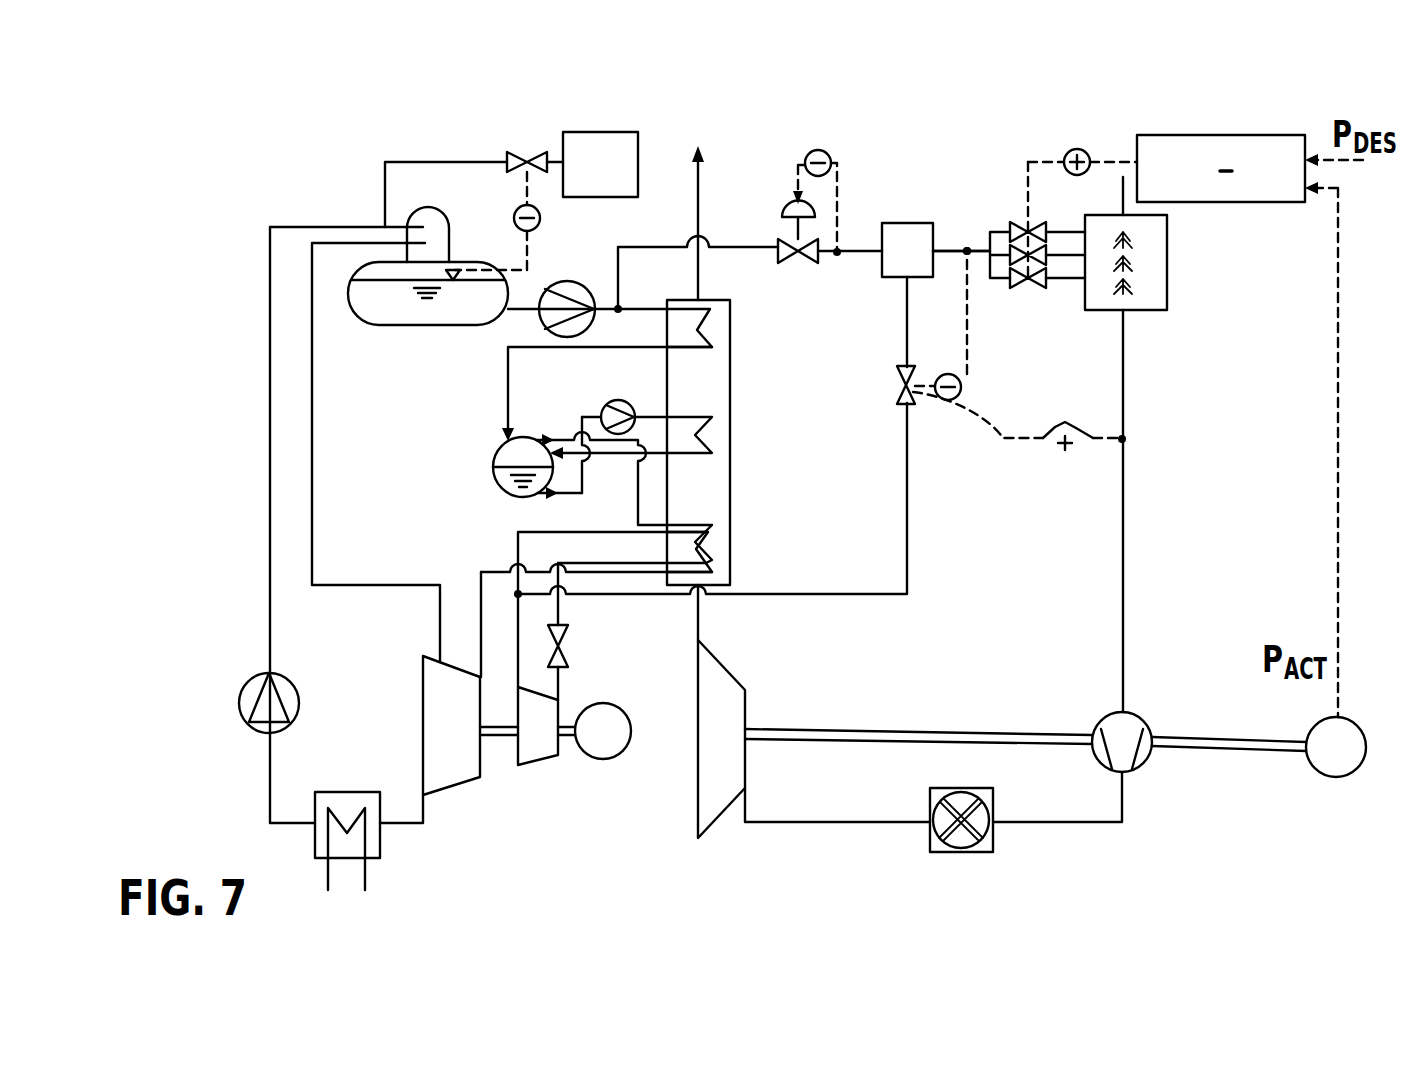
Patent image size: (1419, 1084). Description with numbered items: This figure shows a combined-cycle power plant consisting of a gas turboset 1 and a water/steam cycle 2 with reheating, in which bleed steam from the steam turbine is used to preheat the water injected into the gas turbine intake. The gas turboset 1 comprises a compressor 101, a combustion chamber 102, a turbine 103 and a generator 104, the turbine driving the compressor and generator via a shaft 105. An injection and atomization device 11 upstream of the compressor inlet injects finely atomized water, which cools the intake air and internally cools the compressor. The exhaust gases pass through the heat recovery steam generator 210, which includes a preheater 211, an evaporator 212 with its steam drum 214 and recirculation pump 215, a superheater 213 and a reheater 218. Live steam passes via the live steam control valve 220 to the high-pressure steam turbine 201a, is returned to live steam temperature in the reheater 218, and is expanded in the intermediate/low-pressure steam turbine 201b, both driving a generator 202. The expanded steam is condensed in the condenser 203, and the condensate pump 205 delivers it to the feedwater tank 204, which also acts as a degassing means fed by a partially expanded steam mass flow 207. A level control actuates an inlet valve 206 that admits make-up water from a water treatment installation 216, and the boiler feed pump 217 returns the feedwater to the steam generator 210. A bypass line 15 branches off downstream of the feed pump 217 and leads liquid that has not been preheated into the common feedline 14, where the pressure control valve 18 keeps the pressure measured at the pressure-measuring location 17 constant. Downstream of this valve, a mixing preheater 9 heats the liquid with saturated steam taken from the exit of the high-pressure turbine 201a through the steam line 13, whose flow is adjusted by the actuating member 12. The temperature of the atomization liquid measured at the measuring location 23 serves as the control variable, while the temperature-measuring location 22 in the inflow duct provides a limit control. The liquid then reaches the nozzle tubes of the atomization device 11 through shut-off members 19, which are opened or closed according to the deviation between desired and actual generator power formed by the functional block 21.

The gas turboset 1 is at (954, 697).
The water/steam cycle 2 is at (423, 447).
The mixing preheater 9 is at (893, 223).
The injection and atomization device 11 is at (1163, 300).
The actuating member 12 is at (910, 404).
The branch line 13 is at (907, 528).
The feedline 14 is at (980, 250).
The bypass line 15 is at (655, 247).
The pressure-measuring location 17 is at (829, 234).
The pressure control valve 18 is at (782, 257).
The shut-off members 19 is at (1040, 285).
The functional block 21 is at (1217, 202).
The temperature-measuring location 22 is at (1124, 440).
The measuring location 23 is at (967, 251).
The compressor 101 is at (1136, 766).
The combustion chamber 102 is at (991, 829).
The turbine 103 is at (718, 808).
The generator 104 is at (1332, 778).
The shaft 105 is at (1010, 733).
The high-pressure steam turbine 201a is at (527, 762).
The intermediate/low-pressure steam turbine 201b is at (462, 760).
The generator 202 is at (612, 755).
The condenser 203 is at (378, 838).
The feedwater tank 204 is at (402, 325).
The condensate pump 205 is at (238, 698).
The inlet valve 206 is at (527, 150).
The partially expanded steam mass flow 207 is at (312, 513).
The heat recovery steam generator 210 is at (730, 472).
The preheater 211 is at (700, 322).
The evaporator 212 is at (715, 430).
The superheater 213 is at (712, 525).
The steam drum 214 is at (527, 496).
The recirculation pump 215 is at (625, 388).
The water treatment installation 216 is at (630, 180).
The boiler feed pump 217 is at (567, 281).
The reheater 218 is at (712, 575).
The live steam control valve 220 is at (563, 640).